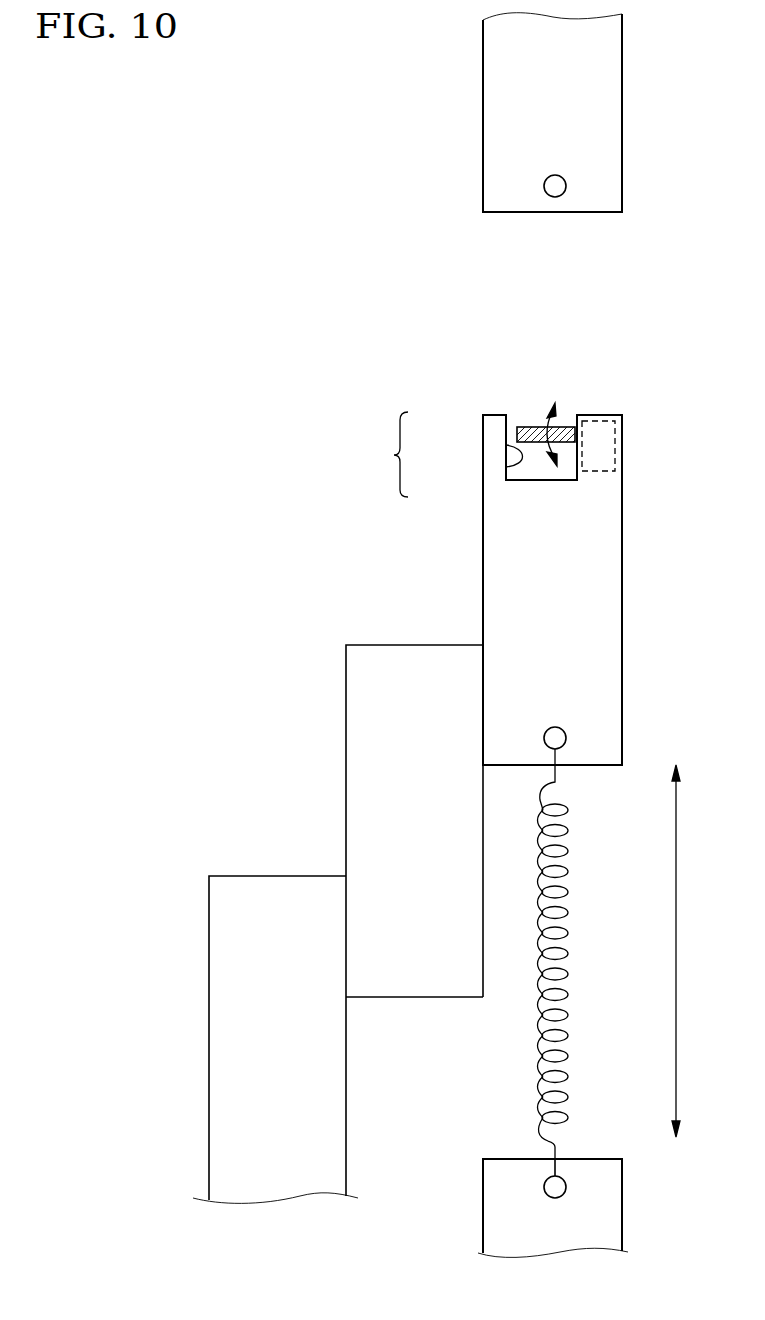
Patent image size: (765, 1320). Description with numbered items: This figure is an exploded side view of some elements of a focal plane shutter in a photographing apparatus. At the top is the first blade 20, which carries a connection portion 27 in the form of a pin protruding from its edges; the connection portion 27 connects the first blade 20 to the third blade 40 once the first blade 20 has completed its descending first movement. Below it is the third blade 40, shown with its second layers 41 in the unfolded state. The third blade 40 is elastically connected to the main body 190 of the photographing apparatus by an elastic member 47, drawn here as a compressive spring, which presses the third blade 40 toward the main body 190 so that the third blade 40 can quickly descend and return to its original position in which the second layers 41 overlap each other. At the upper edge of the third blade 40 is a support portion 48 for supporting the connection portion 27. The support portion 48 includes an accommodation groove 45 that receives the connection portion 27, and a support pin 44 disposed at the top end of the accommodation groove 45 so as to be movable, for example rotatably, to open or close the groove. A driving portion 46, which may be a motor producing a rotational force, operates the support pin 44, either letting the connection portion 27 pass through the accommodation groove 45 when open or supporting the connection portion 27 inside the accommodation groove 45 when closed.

The first blade 20 is at (603, 93).
The connection portion 27 is at (566, 186).
The third blade 40 is at (546, 584).
The second layers 41 is at (605, 673).
The support pin 44 is at (525, 433).
The accommodation groove 45 is at (523, 458).
The driving portion 46 is at (608, 444).
The elastic member 47 is at (567, 942).
The support portion 48 is at (387, 454).
The main body 190 is at (608, 1198).